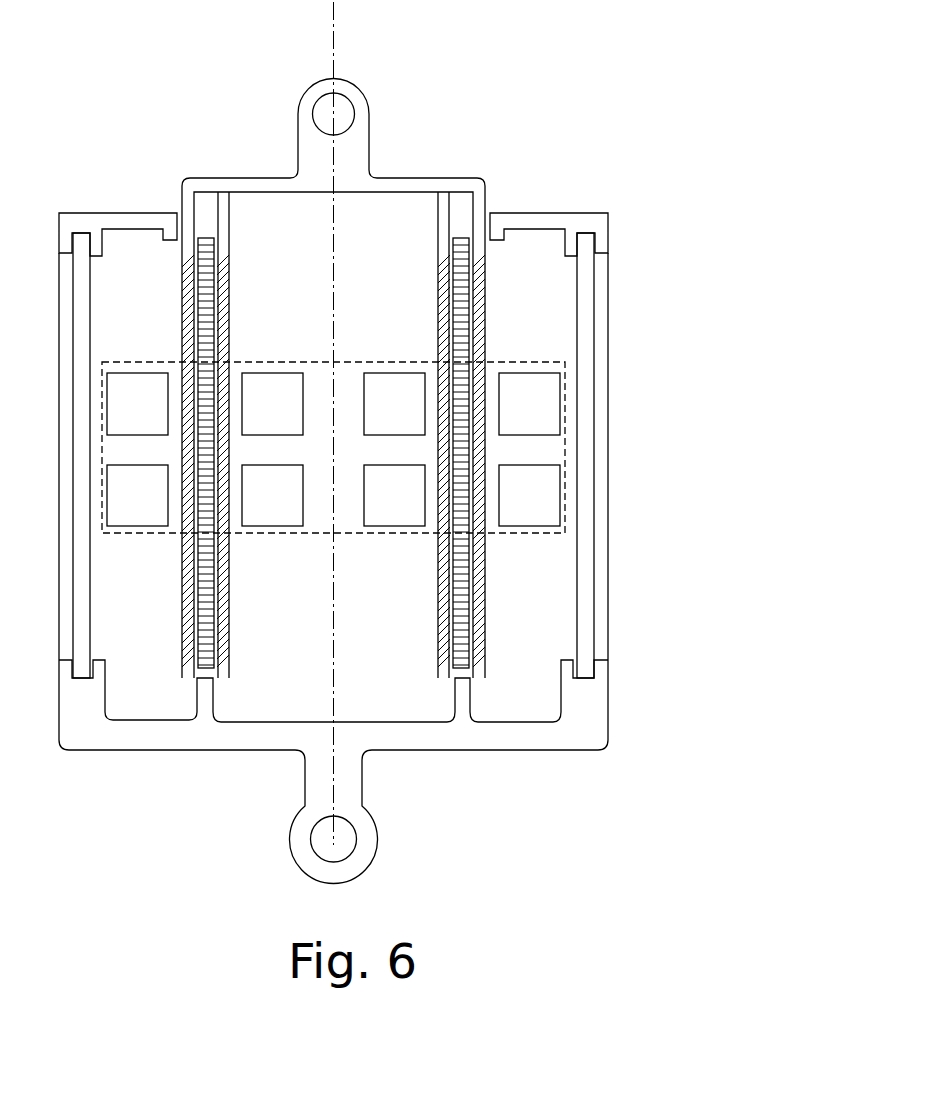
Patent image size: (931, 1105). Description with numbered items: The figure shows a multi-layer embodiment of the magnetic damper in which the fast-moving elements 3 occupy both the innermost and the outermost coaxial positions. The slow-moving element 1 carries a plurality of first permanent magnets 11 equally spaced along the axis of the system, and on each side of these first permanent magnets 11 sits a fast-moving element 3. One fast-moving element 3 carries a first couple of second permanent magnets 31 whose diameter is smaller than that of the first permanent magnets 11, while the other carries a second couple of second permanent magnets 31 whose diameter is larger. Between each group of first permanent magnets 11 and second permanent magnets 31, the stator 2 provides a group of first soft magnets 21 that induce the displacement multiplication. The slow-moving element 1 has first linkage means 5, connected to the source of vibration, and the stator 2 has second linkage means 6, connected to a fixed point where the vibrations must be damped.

The slow-moving element 1 is at (247, 755).
The stator 2 is at (257, 166).
The fast-moving element 3 is at (403, 343).
The first linkage means 5 is at (381, 865).
The second linkage means 6 is at (375, 81).
The first permanent magnets 11 is at (471, 668).
The first soft magnets 21 is at (178, 301).
The second permanent magnets 31 is at (429, 372).